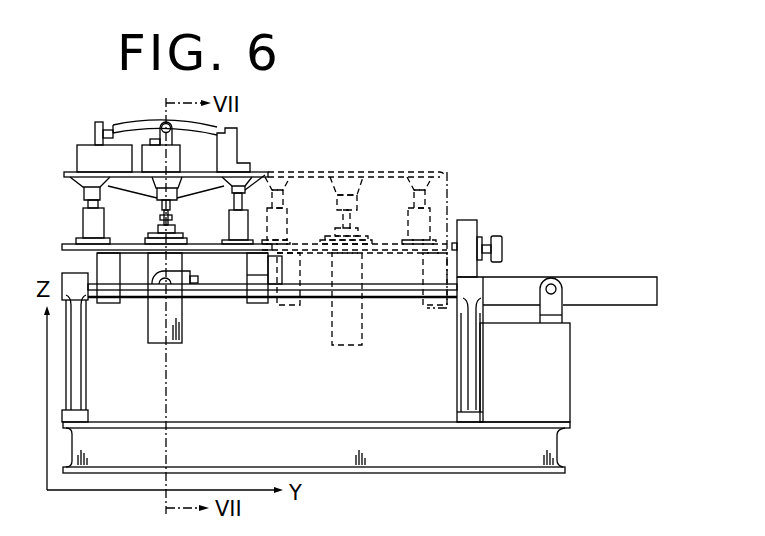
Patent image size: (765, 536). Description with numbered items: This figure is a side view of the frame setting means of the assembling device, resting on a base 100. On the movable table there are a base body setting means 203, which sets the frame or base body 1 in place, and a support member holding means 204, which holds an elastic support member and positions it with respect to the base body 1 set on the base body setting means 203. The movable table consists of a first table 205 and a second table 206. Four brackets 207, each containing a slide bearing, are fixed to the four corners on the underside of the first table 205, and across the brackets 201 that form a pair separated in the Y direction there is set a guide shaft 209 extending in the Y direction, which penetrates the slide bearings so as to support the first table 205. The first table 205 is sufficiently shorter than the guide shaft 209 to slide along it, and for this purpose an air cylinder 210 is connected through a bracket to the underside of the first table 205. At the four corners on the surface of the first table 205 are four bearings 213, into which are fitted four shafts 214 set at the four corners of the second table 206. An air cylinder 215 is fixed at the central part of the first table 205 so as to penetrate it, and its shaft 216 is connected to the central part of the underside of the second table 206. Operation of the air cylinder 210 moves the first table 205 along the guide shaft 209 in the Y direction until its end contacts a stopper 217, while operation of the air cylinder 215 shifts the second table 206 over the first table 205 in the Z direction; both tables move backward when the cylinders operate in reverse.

The base 100 is at (556, 450).
The bracket 201 is at (82, 376).
The base body setting means 203 is at (238, 139).
The support member holding means 204 is at (100, 116).
The base body 1 is at (138, 125).
The first table 205 is at (63, 247).
The second table 206 is at (68, 172).
The bracket 207 is at (97, 271).
The guide shaft 209 is at (413, 288).
The air cylinder 210 is at (567, 278).
The bearing 213 is at (82, 218).
The shaft 214 is at (88, 197).
The air cylinder 215 is at (158, 343).
The shaft 216 is at (163, 218).
The stopper 217 is at (478, 240).